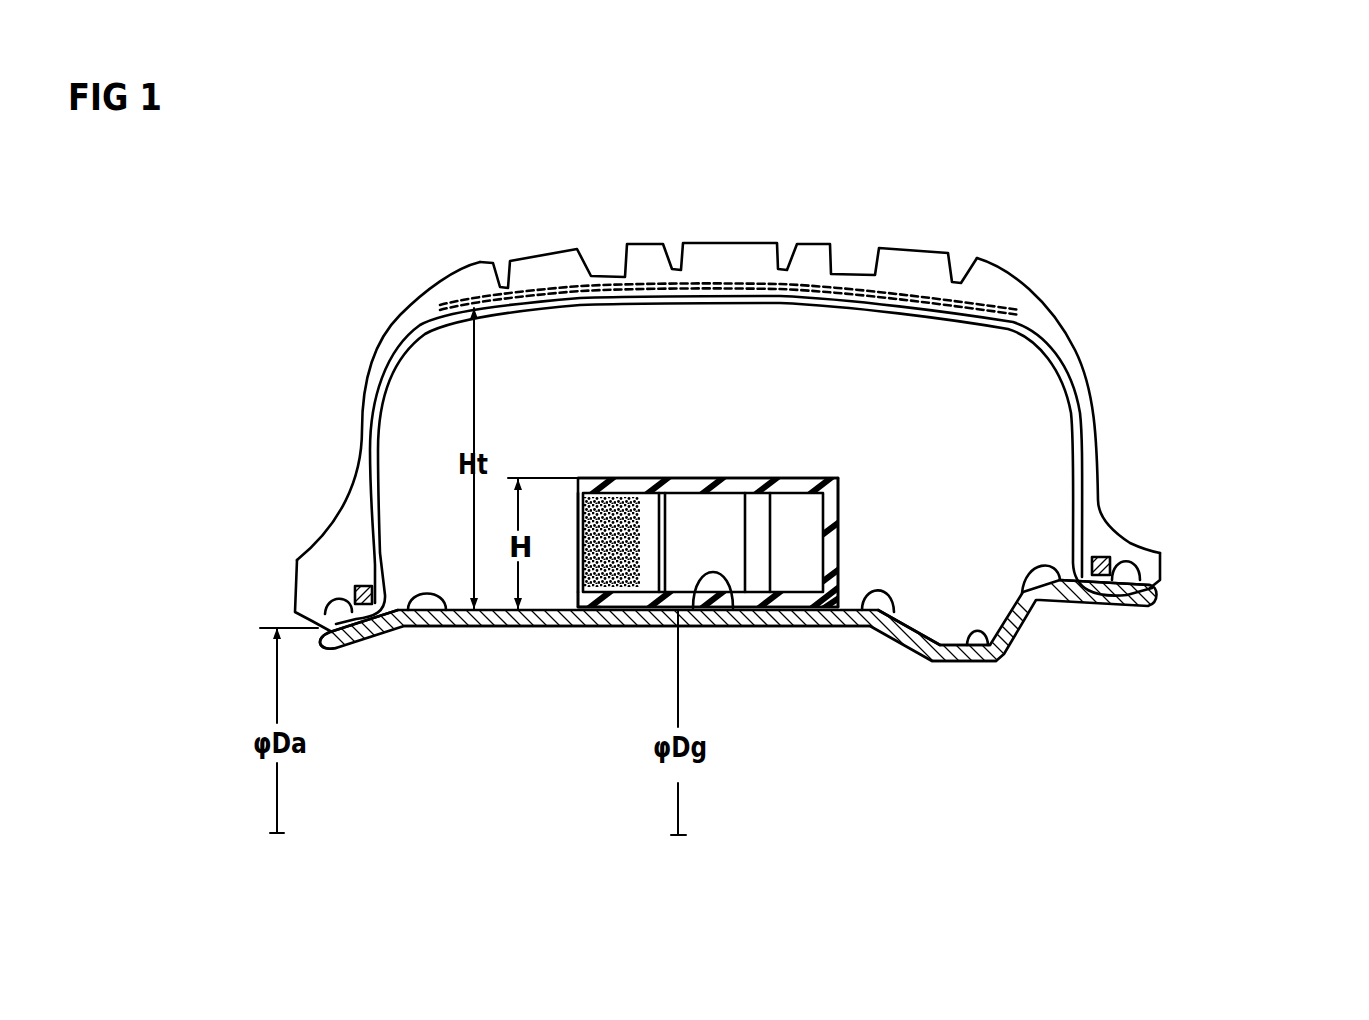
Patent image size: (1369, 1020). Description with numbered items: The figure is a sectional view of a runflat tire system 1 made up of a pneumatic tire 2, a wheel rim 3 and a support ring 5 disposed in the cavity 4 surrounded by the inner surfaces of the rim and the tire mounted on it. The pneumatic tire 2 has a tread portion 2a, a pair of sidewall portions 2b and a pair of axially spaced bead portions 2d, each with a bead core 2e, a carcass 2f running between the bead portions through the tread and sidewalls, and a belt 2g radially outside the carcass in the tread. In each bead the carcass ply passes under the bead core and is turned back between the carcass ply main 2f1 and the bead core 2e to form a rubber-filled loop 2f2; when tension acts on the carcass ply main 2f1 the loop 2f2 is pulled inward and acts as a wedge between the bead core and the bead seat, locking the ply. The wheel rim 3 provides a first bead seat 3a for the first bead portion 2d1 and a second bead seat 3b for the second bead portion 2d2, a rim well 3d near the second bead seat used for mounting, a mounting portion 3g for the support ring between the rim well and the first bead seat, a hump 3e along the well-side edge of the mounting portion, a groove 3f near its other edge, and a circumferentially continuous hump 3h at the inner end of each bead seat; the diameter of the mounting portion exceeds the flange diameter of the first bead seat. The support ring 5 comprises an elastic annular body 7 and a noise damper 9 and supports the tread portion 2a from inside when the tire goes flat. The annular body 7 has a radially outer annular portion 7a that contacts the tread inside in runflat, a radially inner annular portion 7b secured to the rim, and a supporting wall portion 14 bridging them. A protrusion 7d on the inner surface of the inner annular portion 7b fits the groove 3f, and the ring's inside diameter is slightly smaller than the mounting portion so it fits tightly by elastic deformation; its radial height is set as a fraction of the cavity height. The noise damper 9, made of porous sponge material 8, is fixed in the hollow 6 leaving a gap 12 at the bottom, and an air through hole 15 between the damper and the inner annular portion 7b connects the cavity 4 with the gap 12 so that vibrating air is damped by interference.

The runflat tire system 1 is at (838, 157).
The pneumatic tire 2 is at (645, 230).
The tread portion 2a is at (732, 240).
The sidewall portions 2b is at (355, 411).
The bead portions 2d is at (717, 592).
The first bead portion 2d1 is at (293, 588).
The second bead portion 2d2 is at (1167, 568).
The bead core 2e is at (362, 585).
The carcass 2f is at (1047, 357).
The carcass ply main 2f1 is at (397, 377).
The loop 2f2 is at (325, 598).
The belt 2g is at (1002, 300).
The wheel rim 3 is at (515, 632).
The first bead seat 3a is at (368, 640).
The second bead seat 3b is at (1101, 606).
The rim well 3d is at (990, 660).
The hump 3e is at (893, 614).
The groove 3f is at (628, 628).
The mounting portion 3g is at (728, 610).
The hump 3h is at (447, 628).
The cavity 4 is at (944, 419).
The support ring 5 is at (655, 476).
The hollow 6 is at (688, 525).
The annular body 7 is at (810, 476).
The radially outer annular portion 7a is at (750, 488).
The radially inner annular portion 7b is at (809, 598).
The protrusion 7d is at (600, 614).
The porous sponge material 8 is at (620, 488).
The noise damper 9 is at (628, 520).
The gap 12 is at (793, 534).
The supporting wall portion 14 is at (833, 560).
The air through hole 15 is at (572, 602).